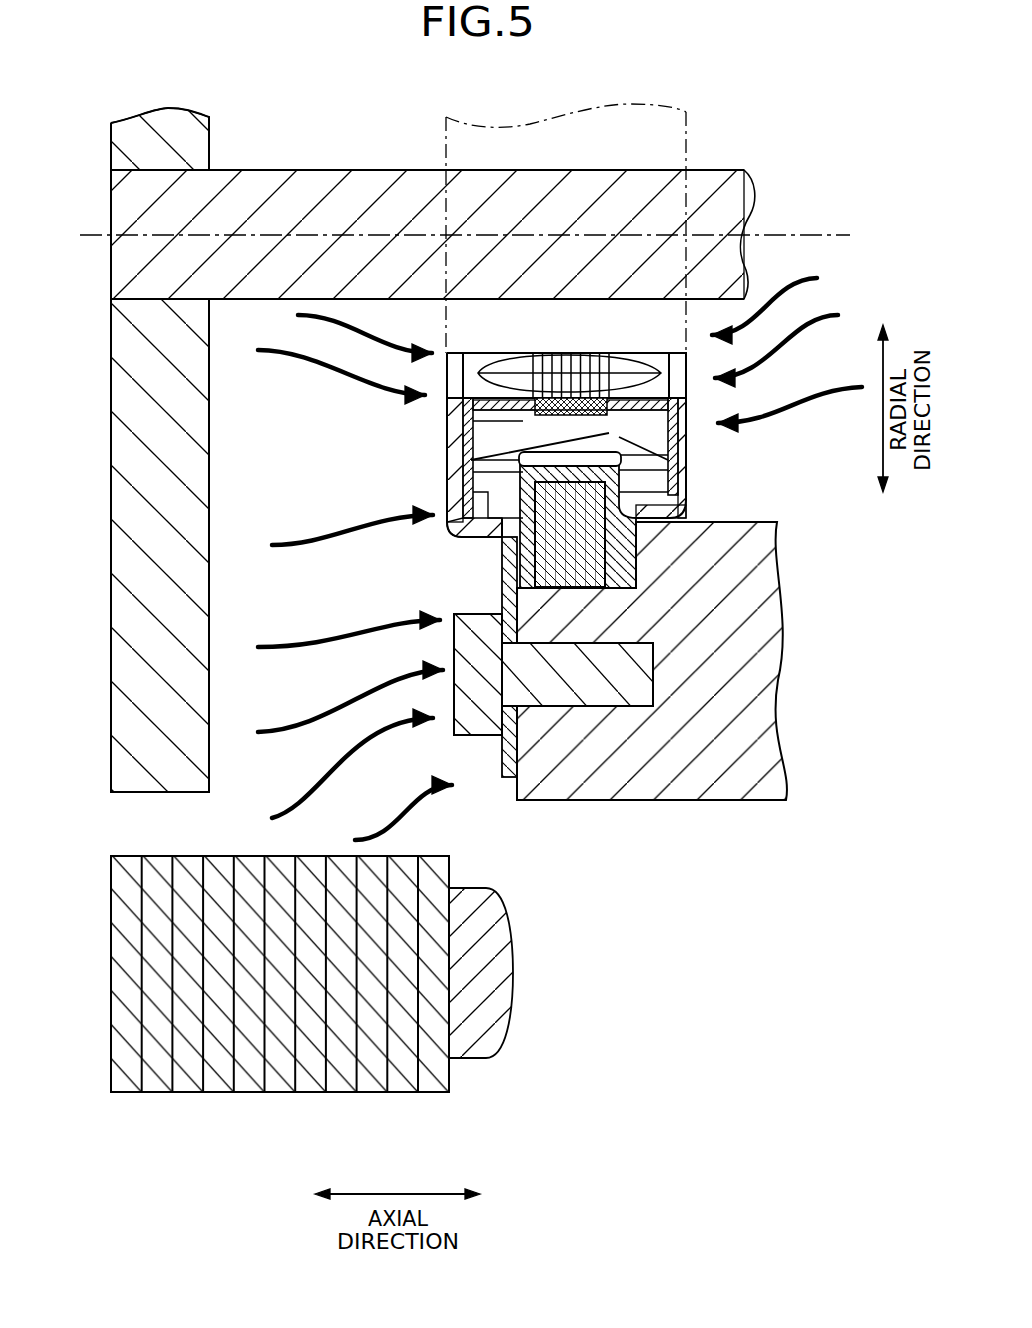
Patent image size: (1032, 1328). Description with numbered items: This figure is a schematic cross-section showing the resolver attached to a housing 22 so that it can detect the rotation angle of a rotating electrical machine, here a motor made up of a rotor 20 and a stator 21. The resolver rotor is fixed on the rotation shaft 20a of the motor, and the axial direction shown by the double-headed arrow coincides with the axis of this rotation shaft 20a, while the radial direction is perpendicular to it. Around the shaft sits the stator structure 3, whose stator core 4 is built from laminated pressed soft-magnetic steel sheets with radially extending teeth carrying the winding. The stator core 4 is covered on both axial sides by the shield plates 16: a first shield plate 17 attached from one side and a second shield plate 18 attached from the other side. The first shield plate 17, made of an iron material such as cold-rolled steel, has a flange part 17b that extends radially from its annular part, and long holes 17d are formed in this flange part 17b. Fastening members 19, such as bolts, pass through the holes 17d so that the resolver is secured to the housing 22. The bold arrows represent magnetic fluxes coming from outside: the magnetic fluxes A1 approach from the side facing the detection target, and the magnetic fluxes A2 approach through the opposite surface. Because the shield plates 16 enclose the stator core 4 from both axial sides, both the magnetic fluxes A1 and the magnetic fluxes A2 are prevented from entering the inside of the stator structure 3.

The stator structure 3 is at (378, 422).
The stator core 4 is at (460, 437).
The shield plates 16 is at (423, 550).
The first shield plate 17 is at (509, 590).
The flange part 17b is at (500, 757).
The holes 17d is at (503, 738).
The second shield plate 18 is at (712, 453).
The fastening members 19 is at (603, 706).
The rotor 20 is at (100, 494).
The rotation shaft 20a is at (313, 187).
The stator 21 is at (150, 1102).
The housing 22 is at (670, 800).
The magnetic fluxes A1 is at (367, 835).
The magnetic fluxes A2 is at (790, 345).